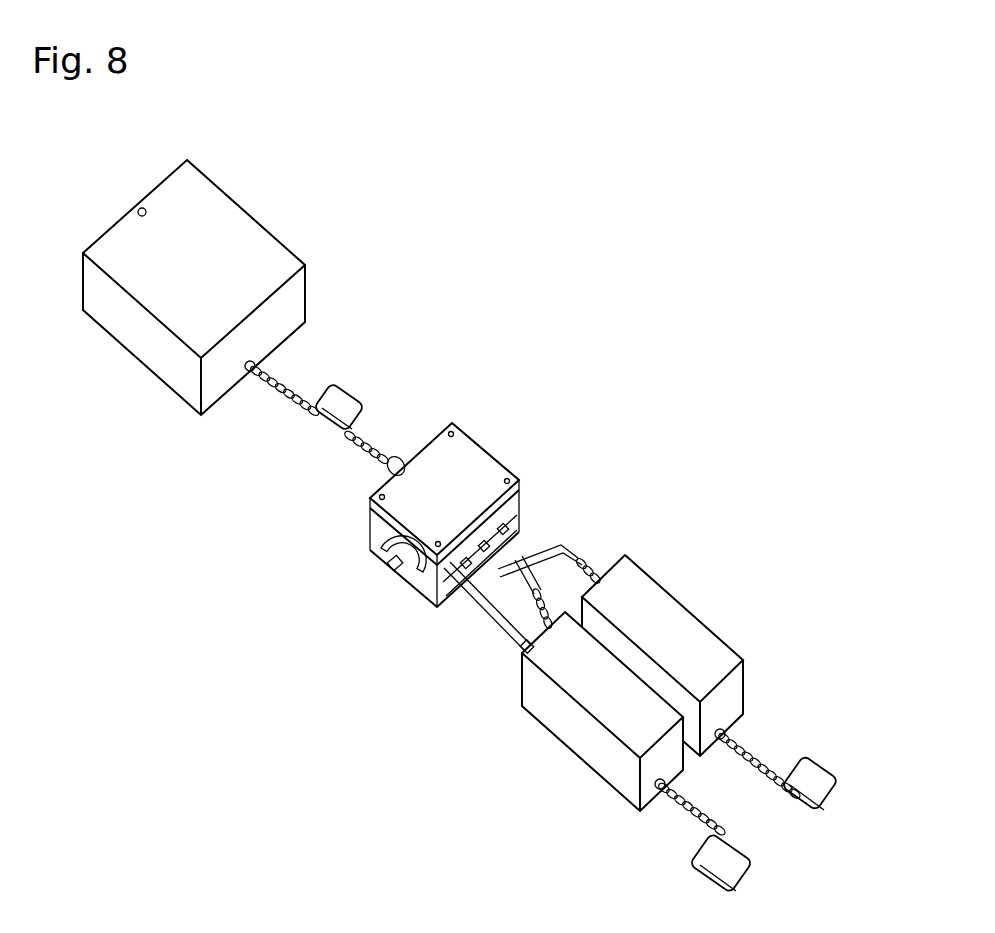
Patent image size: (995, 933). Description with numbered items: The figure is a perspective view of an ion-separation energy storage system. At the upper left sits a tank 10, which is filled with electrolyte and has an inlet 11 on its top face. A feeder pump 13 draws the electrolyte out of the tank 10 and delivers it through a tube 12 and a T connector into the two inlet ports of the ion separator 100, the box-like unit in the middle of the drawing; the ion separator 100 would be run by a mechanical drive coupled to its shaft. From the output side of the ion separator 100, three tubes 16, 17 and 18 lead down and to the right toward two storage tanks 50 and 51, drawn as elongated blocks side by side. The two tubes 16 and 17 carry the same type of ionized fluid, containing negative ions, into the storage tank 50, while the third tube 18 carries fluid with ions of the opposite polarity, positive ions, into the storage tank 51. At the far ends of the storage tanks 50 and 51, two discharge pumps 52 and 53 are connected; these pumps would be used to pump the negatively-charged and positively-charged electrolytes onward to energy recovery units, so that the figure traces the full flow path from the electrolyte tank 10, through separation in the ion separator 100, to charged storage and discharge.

The tank 10 is at (223, 287).
The inlet 11 is at (95, 193).
The tube 12 is at (297, 435).
The feeder pump 13 is at (385, 357).
The ion separator 100 is at (479, 471).
The tube 16 is at (428, 619).
The tube 17 is at (408, 656).
The tube 18 is at (600, 514).
The storage tank 50 is at (530, 718).
The storage tank 51 is at (688, 652).
The discharge pump 52 is at (608, 847).
The discharge pump 53 is at (801, 741).